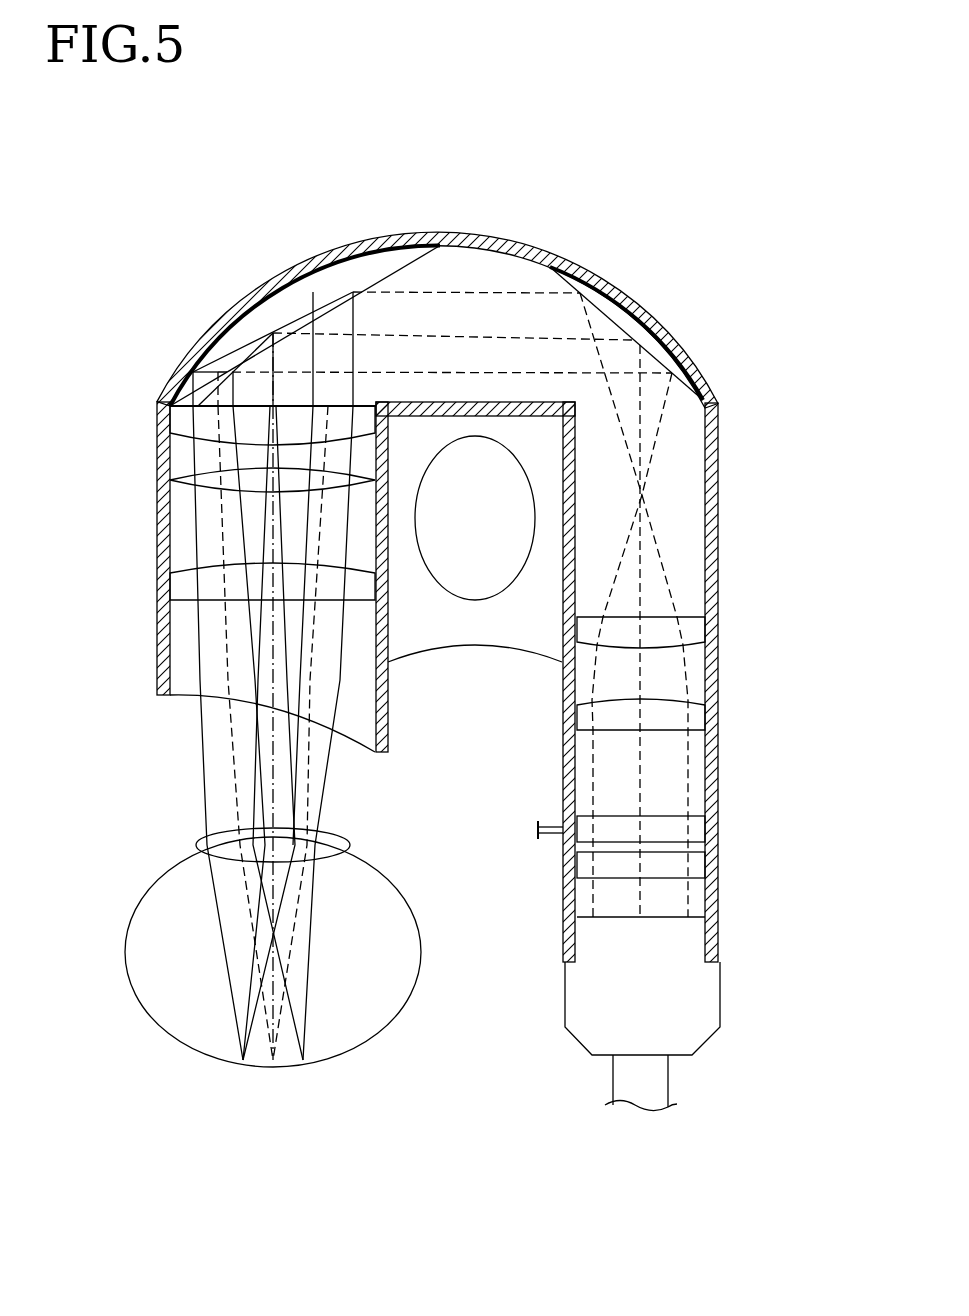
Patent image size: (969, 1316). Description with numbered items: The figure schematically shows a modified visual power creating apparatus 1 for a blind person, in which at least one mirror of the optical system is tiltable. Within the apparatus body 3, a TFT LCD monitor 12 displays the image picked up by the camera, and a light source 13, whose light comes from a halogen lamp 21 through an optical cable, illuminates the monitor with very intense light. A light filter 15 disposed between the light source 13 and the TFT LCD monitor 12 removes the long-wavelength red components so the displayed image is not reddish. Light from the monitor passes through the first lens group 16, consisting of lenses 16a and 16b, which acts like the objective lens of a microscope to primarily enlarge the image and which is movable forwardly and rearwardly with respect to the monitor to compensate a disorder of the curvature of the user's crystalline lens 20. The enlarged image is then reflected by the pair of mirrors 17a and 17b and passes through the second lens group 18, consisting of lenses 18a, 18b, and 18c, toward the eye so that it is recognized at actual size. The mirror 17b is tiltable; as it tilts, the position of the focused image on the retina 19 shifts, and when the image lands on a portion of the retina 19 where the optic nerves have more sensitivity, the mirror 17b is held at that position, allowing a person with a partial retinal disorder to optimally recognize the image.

The visual power creating apparatus 1 is at (720, 384).
The apparatus body 3 is at (583, 238).
The TFT LCD monitor 12 is at (678, 828).
The light source 13 is at (692, 1007).
The light filter 15 is at (678, 868).
The first lens group 16 is at (731, 673).
The lens 16a is at (690, 628).
The lens 16b is at (702, 715).
The mirror 17a is at (247, 330).
The mirror 17b is at (625, 320).
The second lens group 18 is at (189, 503).
The lens 18a is at (183, 417).
The lens 18b is at (183, 479).
The lens 18c is at (222, 567).
The retina 19 is at (317, 1047).
The crystalline lens 20 is at (327, 842).
The halogen lamp 21 is at (480, 523).